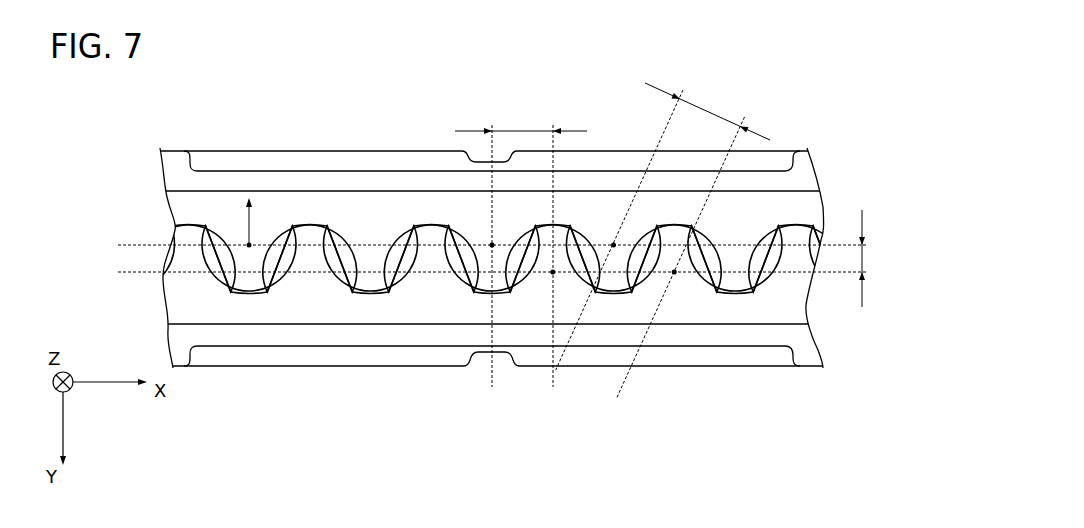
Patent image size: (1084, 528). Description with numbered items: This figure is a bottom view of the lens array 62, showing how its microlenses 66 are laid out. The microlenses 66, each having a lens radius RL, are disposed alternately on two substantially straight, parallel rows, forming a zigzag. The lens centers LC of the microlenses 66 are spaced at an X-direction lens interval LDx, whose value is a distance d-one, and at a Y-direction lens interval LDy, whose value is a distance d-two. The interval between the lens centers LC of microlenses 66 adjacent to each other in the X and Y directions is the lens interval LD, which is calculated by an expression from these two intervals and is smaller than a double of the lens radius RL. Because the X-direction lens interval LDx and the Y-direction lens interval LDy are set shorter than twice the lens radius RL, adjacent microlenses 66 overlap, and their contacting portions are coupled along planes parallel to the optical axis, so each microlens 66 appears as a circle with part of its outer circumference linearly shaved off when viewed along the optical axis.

The lens array 62 is at (124, 150).
The microlens 66 is at (259, 197).
The lens radius RL is at (248, 217).
The lens center LC is at (613, 241).
The lens interval LD is at (724, 115).
The X-direction lens interval LDx is at (534, 126).
The Y-direction lens interval LDy is at (867, 248).